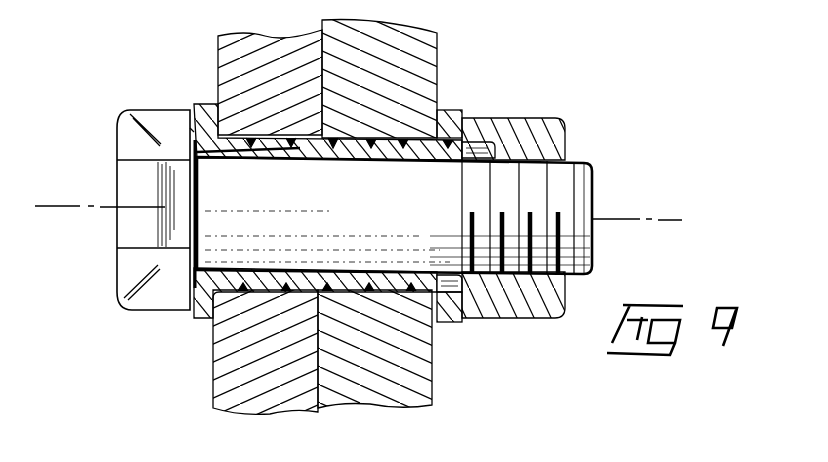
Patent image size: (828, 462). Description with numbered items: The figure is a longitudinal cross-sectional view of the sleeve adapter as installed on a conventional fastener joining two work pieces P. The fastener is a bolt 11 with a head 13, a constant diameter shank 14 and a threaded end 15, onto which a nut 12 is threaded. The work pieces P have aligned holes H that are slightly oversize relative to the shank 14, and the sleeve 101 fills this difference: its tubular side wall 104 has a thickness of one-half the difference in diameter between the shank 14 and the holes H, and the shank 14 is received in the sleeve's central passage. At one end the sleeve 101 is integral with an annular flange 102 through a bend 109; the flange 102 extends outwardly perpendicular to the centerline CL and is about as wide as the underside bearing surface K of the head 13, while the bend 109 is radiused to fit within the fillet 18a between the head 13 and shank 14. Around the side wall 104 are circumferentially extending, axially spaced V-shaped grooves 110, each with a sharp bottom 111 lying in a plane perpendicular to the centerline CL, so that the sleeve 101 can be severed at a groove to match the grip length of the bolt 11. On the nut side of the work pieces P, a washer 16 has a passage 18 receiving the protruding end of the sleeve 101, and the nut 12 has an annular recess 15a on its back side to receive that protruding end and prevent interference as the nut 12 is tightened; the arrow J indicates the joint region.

The bolt 11 is at (135, 194).
The head 13 is at (124, 142).
The shank 14 is at (398, 207).
The threaded end 15 is at (590, 256).
The annular recess 15a is at (492, 146).
The nut 12 is at (542, 118).
The washer 16 is at (448, 322).
The passage 18 is at (448, 116).
The fillet 18a is at (198, 220).
The sleeve 101 is at (402, 138).
The annular flange 102 is at (355, 117).
The tubular side wall 104 is at (374, 270).
The bend 109 is at (200, 160).
The V-shaped grooves 110 is at (250, 136).
The sharp bottom 111 is at (280, 155).
The work pieces P is at (222, 46).
The holes H is at (350, 136).
The underside bearing surface K is at (190, 128).
The joint J is at (128, 337).
The centerline CL is at (82, 210).